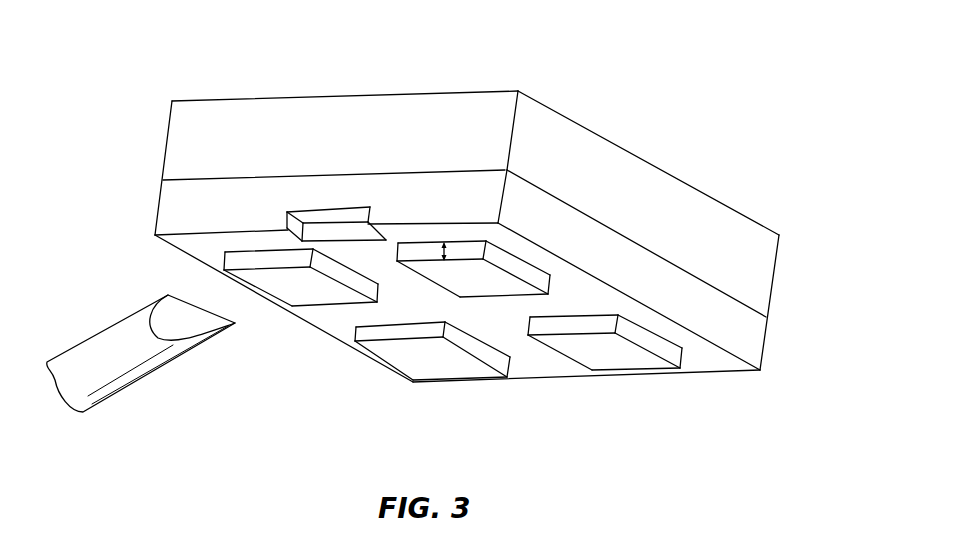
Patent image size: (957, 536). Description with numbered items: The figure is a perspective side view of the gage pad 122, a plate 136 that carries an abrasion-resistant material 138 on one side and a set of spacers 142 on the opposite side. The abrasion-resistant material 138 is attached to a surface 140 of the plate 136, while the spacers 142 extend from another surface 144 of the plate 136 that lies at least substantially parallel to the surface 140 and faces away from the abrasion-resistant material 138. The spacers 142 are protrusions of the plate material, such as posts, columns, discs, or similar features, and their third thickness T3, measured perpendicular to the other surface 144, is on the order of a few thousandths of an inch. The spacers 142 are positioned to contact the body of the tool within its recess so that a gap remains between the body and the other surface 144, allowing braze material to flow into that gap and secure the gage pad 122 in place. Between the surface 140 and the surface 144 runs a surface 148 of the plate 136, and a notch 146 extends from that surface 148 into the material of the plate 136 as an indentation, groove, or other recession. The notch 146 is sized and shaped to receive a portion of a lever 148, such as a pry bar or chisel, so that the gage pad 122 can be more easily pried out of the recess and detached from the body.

The gage pad 122 is at (669, 137).
The plate 136 is at (177, 208).
The abrasion-resistant material 138 is at (193, 141).
The surface 140 is at (702, 272).
The spacers 142 is at (450, 365).
The other surface 144 is at (708, 372).
The notch 146 is at (337, 227).
The surface 148 is at (392, 194).
The third thickness T3 is at (450, 246).